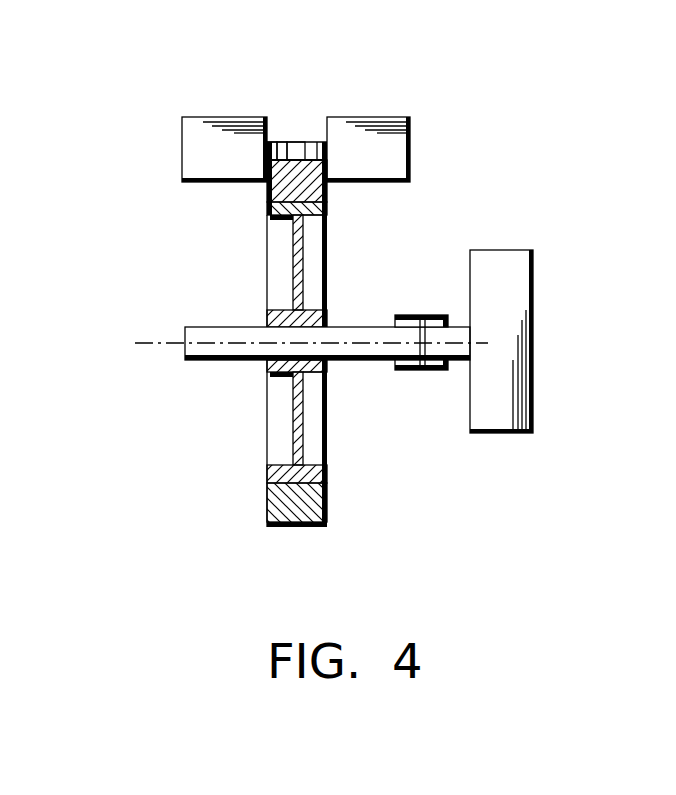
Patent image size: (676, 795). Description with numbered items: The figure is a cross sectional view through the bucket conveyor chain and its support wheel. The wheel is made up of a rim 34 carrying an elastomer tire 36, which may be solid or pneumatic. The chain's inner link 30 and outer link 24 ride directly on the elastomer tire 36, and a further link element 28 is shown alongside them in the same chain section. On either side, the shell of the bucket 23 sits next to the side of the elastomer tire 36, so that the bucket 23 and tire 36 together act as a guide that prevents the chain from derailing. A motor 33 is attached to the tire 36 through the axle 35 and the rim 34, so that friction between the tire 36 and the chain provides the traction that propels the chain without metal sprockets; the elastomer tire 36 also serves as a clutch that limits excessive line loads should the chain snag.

The bucket 23 is at (304, 138).
The outer link 24 is at (311, 84).
The spacer ring 28 is at (337, 118).
The inner link 30 is at (323, 103).
The motor 33 is at (525, 301).
The rim 34 is at (254, 349).
The axle 35 is at (311, 302).
The elastomer tire 36 is at (228, 334).